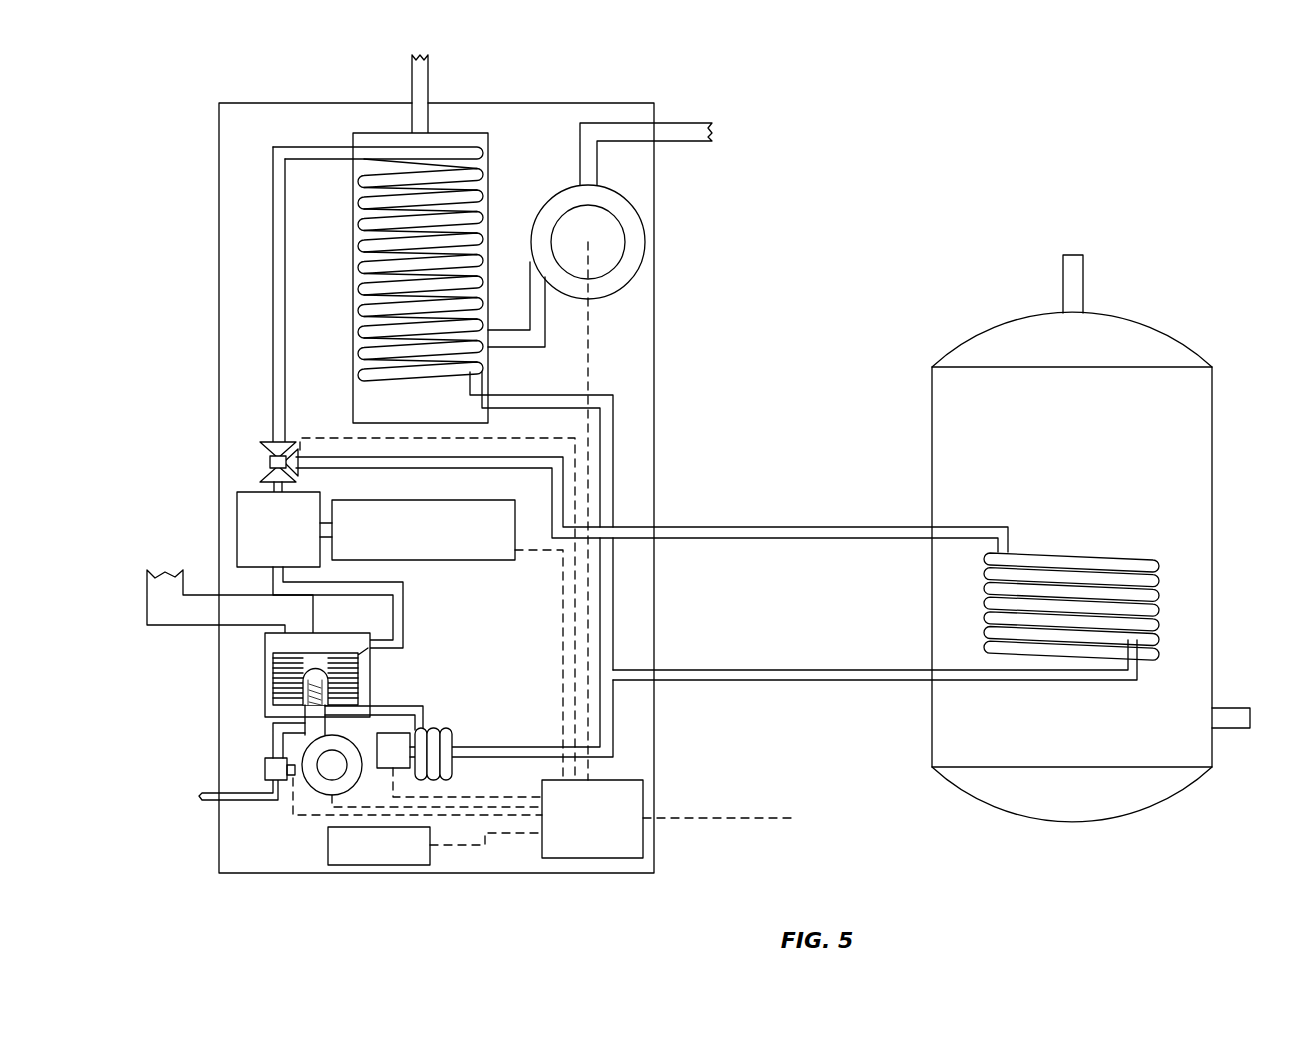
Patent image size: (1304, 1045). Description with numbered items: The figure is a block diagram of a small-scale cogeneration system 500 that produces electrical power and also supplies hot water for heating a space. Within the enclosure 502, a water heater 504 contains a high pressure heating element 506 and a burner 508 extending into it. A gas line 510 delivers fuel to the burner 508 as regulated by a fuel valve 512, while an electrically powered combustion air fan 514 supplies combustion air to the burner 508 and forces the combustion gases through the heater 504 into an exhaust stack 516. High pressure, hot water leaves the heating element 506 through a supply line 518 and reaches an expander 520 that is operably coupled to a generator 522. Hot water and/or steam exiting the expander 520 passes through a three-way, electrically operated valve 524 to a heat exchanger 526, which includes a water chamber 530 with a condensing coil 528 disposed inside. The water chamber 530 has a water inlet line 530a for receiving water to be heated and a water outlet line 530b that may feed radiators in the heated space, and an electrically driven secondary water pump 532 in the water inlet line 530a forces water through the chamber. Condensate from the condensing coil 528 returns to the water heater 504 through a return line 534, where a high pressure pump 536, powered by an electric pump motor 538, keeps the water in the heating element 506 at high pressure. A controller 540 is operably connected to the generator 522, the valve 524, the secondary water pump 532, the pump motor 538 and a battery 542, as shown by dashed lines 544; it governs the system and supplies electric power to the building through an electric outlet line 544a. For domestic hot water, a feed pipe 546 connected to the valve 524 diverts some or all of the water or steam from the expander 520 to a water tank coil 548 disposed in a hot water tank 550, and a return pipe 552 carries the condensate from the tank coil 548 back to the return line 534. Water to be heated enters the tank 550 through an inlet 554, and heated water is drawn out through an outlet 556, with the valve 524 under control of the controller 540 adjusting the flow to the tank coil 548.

The small-scale cogeneration system 500 is at (840, 110).
The housing 502 is at (655, 360).
The water heater 504 is at (264, 700).
The high pressure heating element 506 is at (358, 672).
The burner 508 is at (330, 727).
The gas line 510 is at (204, 798).
The fuel valve 512 is at (265, 766).
The combustion air fan 514 is at (310, 790).
The exhaust stack 516 is at (201, 626).
The supply line 518 is at (405, 602).
The expander 520 is at (237, 520).
The generator 522 is at (412, 561).
The three-way electrically operated valve 524 is at (262, 462).
The heat exchanger 526 is at (351, 135).
The condensing coil 528 is at (490, 153).
The water chamber 530 is at (352, 402).
The water inlet line 530a is at (668, 120).
The water outlet line 530b is at (430, 62).
The secondary water pump 532 is at (645, 226).
The return line 534 is at (613, 460).
The high pressure pump 536 is at (452, 732).
The electric pump motor 538 is at (397, 732).
The controller 540 is at (645, 784).
The battery 542 is at (328, 866).
The dashed lines 544 is at (590, 772).
The electric outlet line 544a is at (719, 838).
The feed pipe 546 is at (754, 527).
The water tank coil 548 is at (1058, 553).
The hot water tank 550 is at (1212, 448).
The return pipe 552 is at (744, 681).
The inlet 554 is at (1232, 708).
The outlet 556 is at (1083, 282).